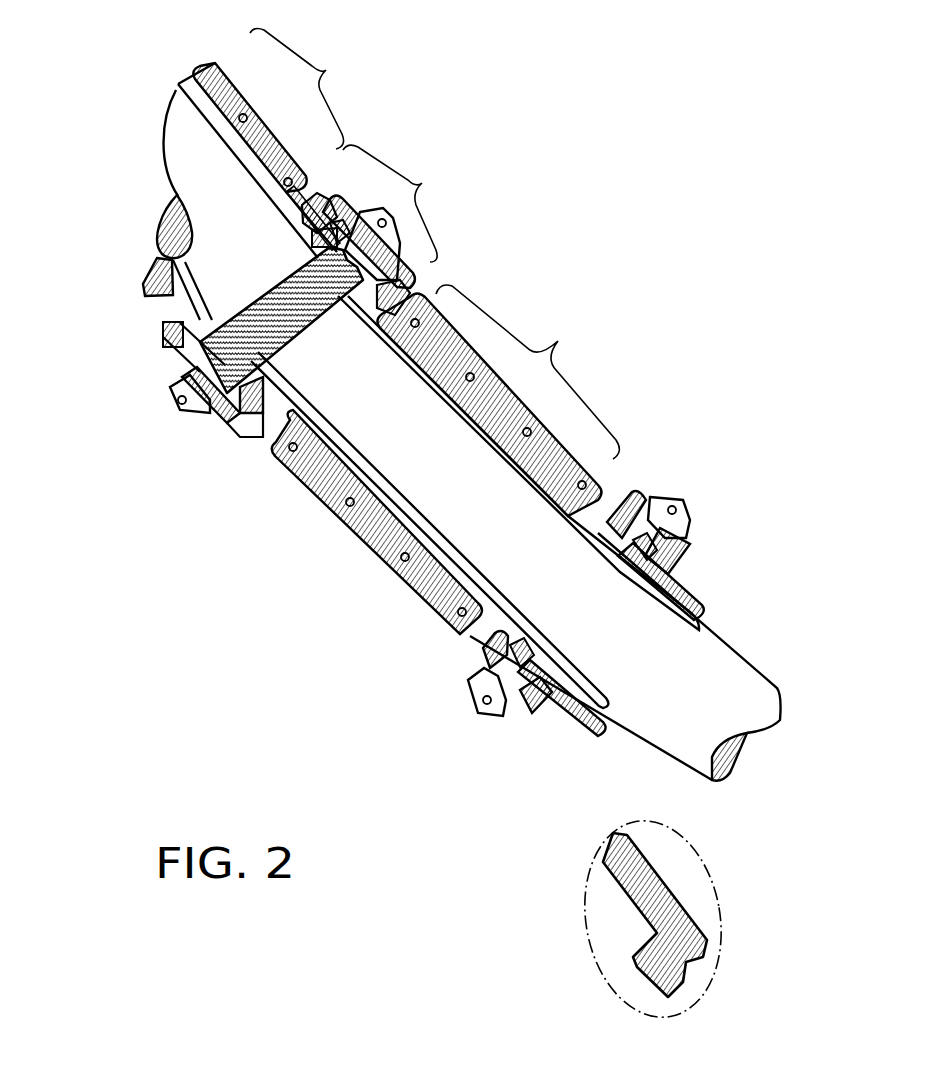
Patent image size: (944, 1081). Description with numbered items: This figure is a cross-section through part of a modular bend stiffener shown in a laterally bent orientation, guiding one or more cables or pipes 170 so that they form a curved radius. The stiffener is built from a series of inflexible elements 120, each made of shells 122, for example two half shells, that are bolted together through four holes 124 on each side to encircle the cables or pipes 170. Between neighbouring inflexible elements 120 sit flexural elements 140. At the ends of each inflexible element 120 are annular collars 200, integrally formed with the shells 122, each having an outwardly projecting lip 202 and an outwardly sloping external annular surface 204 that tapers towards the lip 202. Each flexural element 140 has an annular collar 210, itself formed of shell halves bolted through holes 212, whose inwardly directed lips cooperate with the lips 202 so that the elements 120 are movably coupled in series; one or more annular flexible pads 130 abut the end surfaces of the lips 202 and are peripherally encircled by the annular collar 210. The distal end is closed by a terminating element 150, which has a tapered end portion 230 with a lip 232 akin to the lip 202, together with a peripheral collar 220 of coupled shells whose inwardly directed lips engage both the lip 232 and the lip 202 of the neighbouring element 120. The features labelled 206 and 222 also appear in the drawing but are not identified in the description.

The inflexible element 120 is at (398, 272).
The shell 122 is at (422, 573).
The hole 124 is at (335, 498).
The flexible pad 130 is at (300, 440).
The flexural element 140 is at (385, 229).
The terminating element 150 is at (712, 493).
The cables or pipes 170 is at (705, 703).
The annular collar 200 is at (170, 328).
The outwardly projecting lip 202 is at (648, 520).
The outwardly sloping external annular surface 204 is at (637, 905).
The clip hook 206 is at (690, 972).
The annular collar 210 is at (393, 297).
The hole 212 is at (168, 403).
The peripheral collar 220 is at (472, 683).
The mounting ear 222 is at (687, 517).
The tapered end portion 230 is at (568, 693).
The lip 232 is at (520, 720).